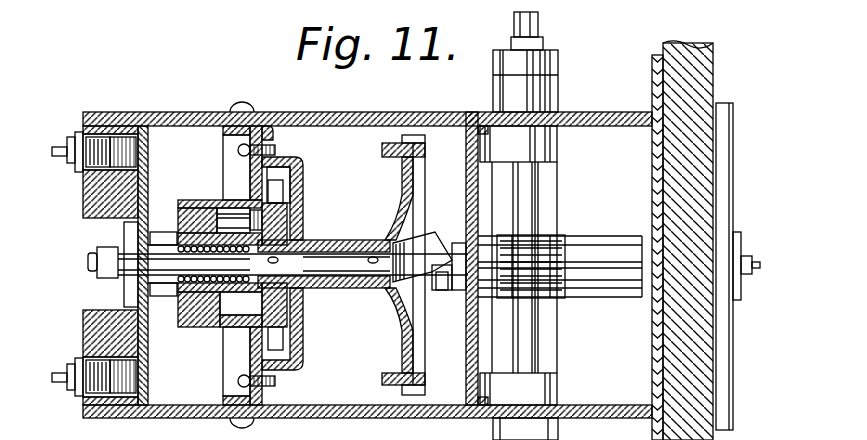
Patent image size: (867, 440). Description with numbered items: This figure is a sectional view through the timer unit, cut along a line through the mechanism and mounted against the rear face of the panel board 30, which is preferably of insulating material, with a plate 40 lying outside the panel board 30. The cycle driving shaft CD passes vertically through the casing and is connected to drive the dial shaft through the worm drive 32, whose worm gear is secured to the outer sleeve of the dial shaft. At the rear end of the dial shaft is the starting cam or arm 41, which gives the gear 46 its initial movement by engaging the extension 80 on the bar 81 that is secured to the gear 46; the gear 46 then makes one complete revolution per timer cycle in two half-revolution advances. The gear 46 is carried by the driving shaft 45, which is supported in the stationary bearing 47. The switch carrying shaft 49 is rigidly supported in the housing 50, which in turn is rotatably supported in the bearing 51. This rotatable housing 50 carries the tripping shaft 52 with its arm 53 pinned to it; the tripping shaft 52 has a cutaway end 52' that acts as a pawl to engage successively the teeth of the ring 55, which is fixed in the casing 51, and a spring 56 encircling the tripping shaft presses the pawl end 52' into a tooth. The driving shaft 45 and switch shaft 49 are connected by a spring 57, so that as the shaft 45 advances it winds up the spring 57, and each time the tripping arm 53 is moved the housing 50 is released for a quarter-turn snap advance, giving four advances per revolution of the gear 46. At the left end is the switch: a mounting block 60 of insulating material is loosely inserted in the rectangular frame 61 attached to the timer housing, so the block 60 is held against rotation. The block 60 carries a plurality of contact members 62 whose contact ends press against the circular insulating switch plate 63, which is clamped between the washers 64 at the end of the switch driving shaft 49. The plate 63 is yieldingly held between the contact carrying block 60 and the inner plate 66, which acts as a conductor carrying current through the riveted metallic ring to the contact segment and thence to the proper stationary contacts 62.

The panel board 30 is at (707, 77).
The worm drive 32 is at (573, 237).
The plate 40 is at (723, 155).
The starting cam 41 is at (437, 290).
The driving shaft 45 is at (325, 263).
The gear 46 is at (390, 173).
The stationary bearing 47 is at (308, 242).
The switch carrying shaft 49 is at (152, 262).
The housing 50 is at (298, 310).
The bearing 51 is at (212, 327).
The tripping shaft 52 is at (232, 203).
The cutaway end 52' is at (166, 236).
The tripping arm 53 is at (283, 163).
The ring 55 is at (178, 313).
The spring 56 is at (268, 197).
The spring 57 is at (202, 290).
The mounting block 60 is at (97, 328).
The frame 61 is at (113, 125).
The contact members 62 is at (52, 377).
The switch plate 63 is at (138, 300).
The washers 64 is at (128, 233).
The inner plate 66 is at (148, 165).
The extension 80 is at (423, 241).
The bar 81 is at (415, 240).
The cycle driving shaft CD is at (537, 185).